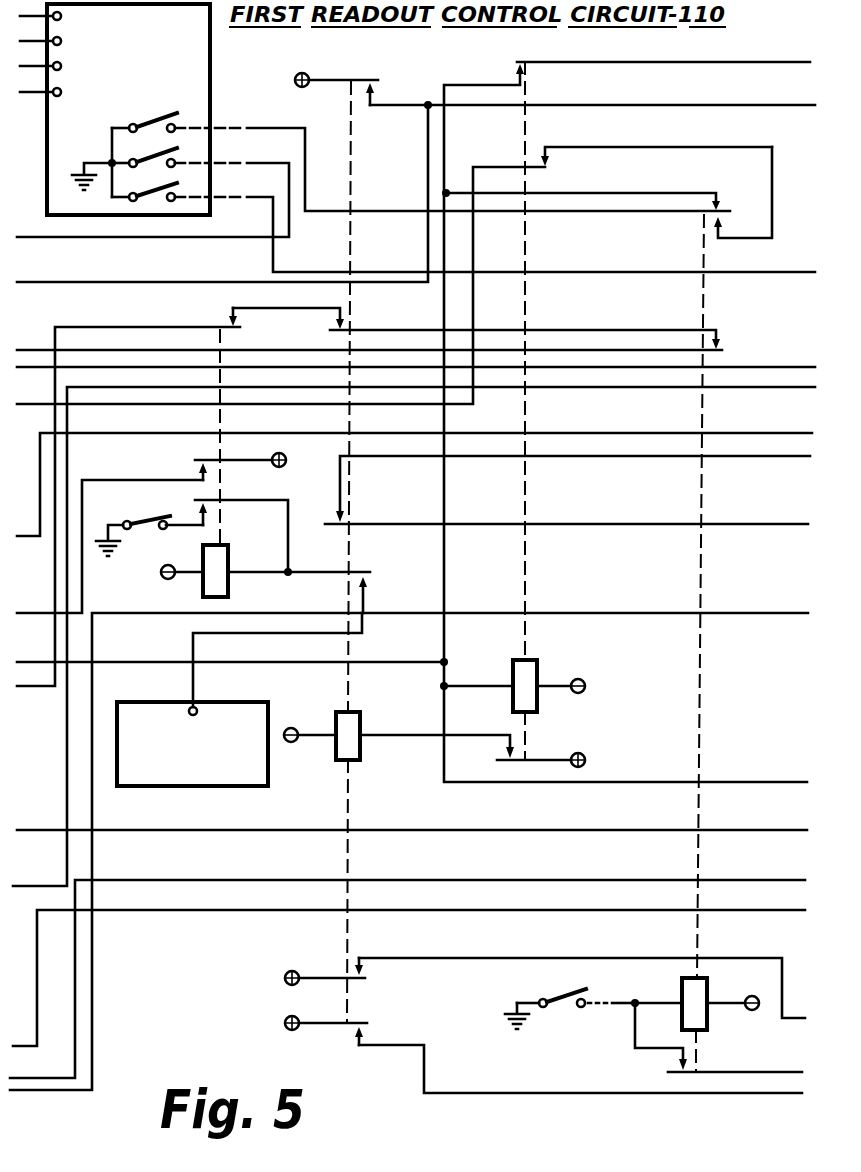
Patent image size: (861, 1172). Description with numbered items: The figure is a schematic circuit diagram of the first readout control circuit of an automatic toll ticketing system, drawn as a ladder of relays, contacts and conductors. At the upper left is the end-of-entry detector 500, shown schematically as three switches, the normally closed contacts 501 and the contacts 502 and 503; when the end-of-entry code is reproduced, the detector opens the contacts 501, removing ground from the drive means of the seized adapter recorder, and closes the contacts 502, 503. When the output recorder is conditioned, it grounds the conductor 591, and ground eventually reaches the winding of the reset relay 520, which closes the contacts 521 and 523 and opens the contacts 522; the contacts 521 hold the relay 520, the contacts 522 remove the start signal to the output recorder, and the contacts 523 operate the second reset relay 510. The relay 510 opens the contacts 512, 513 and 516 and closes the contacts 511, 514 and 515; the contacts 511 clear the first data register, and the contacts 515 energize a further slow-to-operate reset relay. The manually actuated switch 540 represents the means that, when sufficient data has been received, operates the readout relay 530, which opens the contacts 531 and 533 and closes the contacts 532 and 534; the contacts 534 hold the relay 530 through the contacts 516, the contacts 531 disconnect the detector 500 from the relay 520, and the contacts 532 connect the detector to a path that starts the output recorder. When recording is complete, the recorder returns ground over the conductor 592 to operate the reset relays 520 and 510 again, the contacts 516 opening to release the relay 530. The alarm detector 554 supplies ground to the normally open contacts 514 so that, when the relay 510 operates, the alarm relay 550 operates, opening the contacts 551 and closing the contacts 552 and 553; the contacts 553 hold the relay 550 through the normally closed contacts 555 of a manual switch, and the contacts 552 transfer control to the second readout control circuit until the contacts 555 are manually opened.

The end-of-entry detector 500 is at (211, 70).
The normally closed contacts 501 is at (180, 190).
The contacts 502 is at (180, 155).
The contacts 503 is at (180, 120).
The second reset relay 510 is at (360, 748).
The contacts 511 is at (372, 90).
The contacts 512 is at (337, 324).
The contacts 513 is at (330, 524).
The normally open contacts 514 is at (366, 589).
The contacts 515 is at (366, 982).
The contacts 516 is at (352, 1029).
The reset relay 520 is at (538, 662).
The contacts 521 is at (517, 72).
The contacts 522 is at (547, 171).
The contacts 523 is at (508, 750).
The readout relay 530 is at (710, 1023).
The contacts 531 is at (722, 212).
The contacts 532 is at (704, 218).
The contacts 533 is at (722, 352).
The contacts 534 is at (680, 1068).
The manually actuated switch 540 is at (565, 1007).
The alarm relay 550 is at (203, 590).
The contacts 551 is at (230, 320).
The contacts 552 is at (198, 468).
The contacts 553 is at (195, 508).
The alarm detector 554 is at (208, 702).
The normally closed contacts 555 is at (152, 528).
The conductor 591 is at (443, 830).
The conductor 592 is at (118, 662).